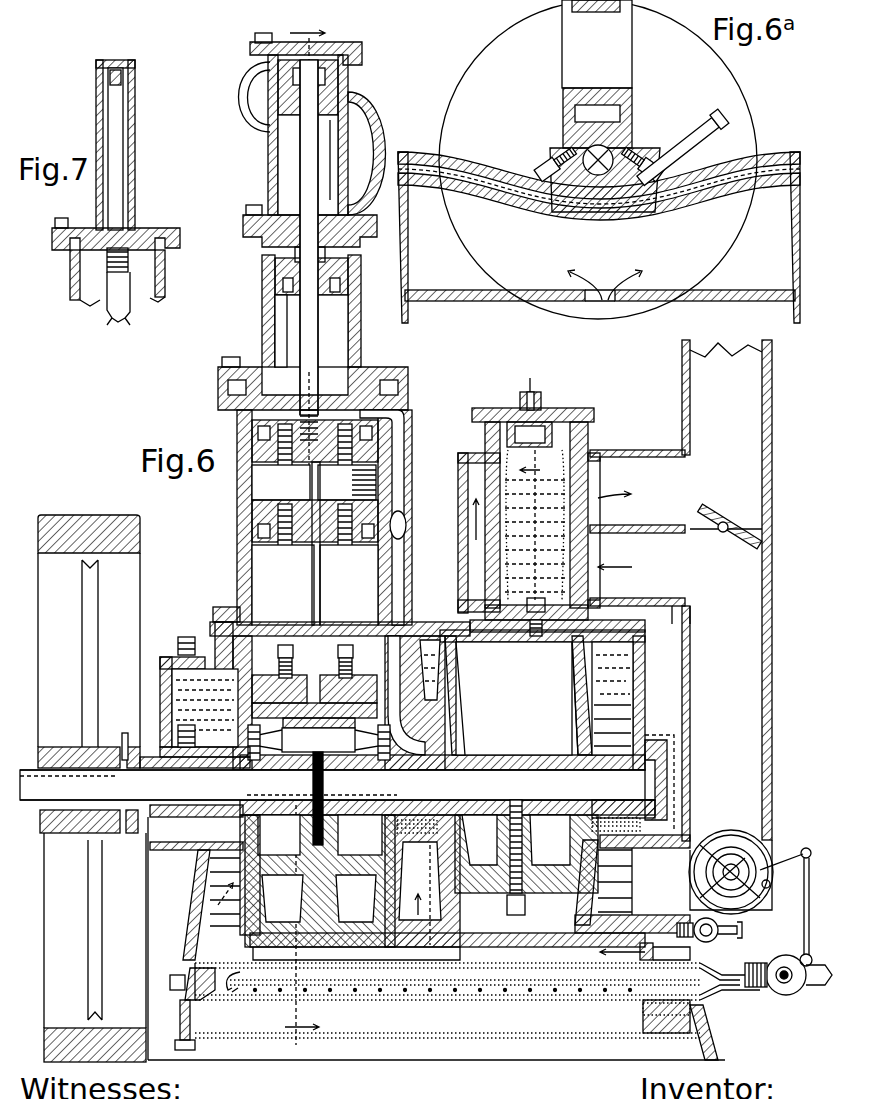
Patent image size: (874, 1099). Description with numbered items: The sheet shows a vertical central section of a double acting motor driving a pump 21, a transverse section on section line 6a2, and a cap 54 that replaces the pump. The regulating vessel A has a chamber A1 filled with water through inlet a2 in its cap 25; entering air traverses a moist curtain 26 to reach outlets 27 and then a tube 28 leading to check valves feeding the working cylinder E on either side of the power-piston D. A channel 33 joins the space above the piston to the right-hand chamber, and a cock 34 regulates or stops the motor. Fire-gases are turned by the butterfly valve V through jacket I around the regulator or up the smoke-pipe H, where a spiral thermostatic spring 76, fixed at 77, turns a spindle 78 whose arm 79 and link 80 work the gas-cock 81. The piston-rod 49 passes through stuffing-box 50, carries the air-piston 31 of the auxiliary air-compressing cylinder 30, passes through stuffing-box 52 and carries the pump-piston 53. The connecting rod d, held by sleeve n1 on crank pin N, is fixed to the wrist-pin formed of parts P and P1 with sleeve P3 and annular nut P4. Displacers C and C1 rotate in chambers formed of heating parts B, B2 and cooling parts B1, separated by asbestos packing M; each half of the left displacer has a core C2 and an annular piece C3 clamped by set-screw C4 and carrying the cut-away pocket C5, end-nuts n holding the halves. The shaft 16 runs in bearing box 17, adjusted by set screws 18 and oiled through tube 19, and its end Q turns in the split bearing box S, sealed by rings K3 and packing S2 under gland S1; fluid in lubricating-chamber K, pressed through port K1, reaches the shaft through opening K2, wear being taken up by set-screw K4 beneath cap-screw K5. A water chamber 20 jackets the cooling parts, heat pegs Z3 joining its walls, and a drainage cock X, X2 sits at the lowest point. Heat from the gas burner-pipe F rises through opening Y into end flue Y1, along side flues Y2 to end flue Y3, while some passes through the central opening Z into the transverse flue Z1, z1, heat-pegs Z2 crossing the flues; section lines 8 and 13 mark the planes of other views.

In FIG. 7, the cap 54 is at (135, 166).
In FIG. 7, the piston-rod 49 is at (128, 274).
In FIG. 6, the piston-rod 49 is at (311, 265).
In FIG. 7, the auxiliary air-compressing cylinder 30 is at (163, 287).
In FIG. 6, the auxiliary air-compressing cylinder 30 is at (311, 331).
In FIG. 6, the section line 8 is at (305, 534).
In FIG. 6, the pump 21 is at (270, 150).
In FIG. 6, the pump-piston 53 is at (308, 165).
In FIG. 6, the stuffing-box 52 is at (300, 218).
In FIG. 6, the air-piston 31 is at (311, 311).
In FIG. 6, the stuffing-box 50 is at (286, 332).
In FIG. 6, the tube 28 is at (331, 399).
In FIG. 6, the annular nut P4 is at (402, 455).
In FIG. 6, the cock 34 is at (412, 527).
In FIG. 6, the channel 33 is at (404, 478).
In FIG. 6A, the channel 33 is at (605, 106).
In FIG. 6, the wrist-pin P is at (270, 485).
In FIG. 6, the sleeve P3 is at (295, 480).
In FIG. 6, the wrist-pin core P1 is at (328, 481).
In FIG. 6, the power-piston D is at (315, 535).
In FIG. 6, the working cylinder E is at (283, 585).
In FIG. 6, the connecting rod d is at (345, 543).
In FIG. 6, the inlet a2 is at (519, 391).
In FIG. 6, the cap 25 is at (587, 370).
In FIG. 6, the regulating vessel A is at (588, 440).
In FIG. 6, the outlets 27 is at (529, 434).
In FIG. 6, the section line 13 is at (571, 732).
In FIG. 6, the regulator chamber A1 is at (522, 571).
In FIG. 6, the curtain 26 is at (545, 603).
In FIG. 6, the jacket I is at (543, 533).
In FIG. 6, the smoke-pipe H is at (681, 590).
In FIG. 6, the butterfly-valve V is at (730, 521).
In FIG. 6, the heating part B is at (444, 791).
In FIG. 6, the section line 6a2 is at (430, 670).
In FIG. 6, the rotating displacer C1 is at (518, 695).
In FIG. 6, the cooling part B1 is at (580, 668).
In FIG. 6, the water chamber 20 is at (633, 670).
In FIG. 6, the heat conveying pegs Z3 is at (632, 707).
In FIG. 6, the cut-away portion C5 is at (402, 780).
In FIG. 6, the set-screw C4 is at (342, 641).
In FIG. 6, the crank pin N is at (319, 739).
In FIG. 6, the sleeve n1 is at (297, 741).
In FIG. 6, the end-nuts n is at (365, 741).
In FIG. 6, the shaft 16 is at (332, 798).
In FIG. 6A, the shaft 16 is at (598, 160).
In FIG. 6, the bearing box 17 is at (430, 768).
In FIG. 6A, the bearing box 17 is at (607, 136).
In FIG. 6, the displacer C is at (280, 868).
In FIG. 6, the core-piece C2 is at (362, 865).
In FIG. 6, the annular piece C3 is at (362, 920).
In FIG. 6, the central transverse flue z1 is at (419, 894).
In FIG. 6, the asbestos packing M is at (645, 825).
In FIG. 6A, the asbestos packing M is at (599, 186).
In FIG. 6, the housing B2 is at (576, 880).
In FIG. 6, the end flue Y3 is at (627, 882).
In FIG. 6, the opening Y is at (225, 930).
In FIG. 6, the end flue Y1 is at (205, 895).
In FIG. 6, the heat-pegs Z2 is at (215, 862).
In FIG. 6, the gas burner-pipe F is at (440, 1000).
In FIG. 6, the drainage cock X is at (742, 931).
In FIG. 6, the valve stem X2 is at (698, 950).
In FIG. 6, the thermostatic spring 76 is at (731, 866).
In FIG. 6, the spindle 78 is at (730, 871).
In FIG. 6, the fixing point 77 is at (777, 885).
In FIG. 6, the arm 79 is at (785, 853).
In FIG. 6, the link 80 is at (802, 912).
In FIG. 6, the gas-cock 81 is at (788, 967).
In FIG. 6, the split bearing box S is at (144, 788).
In FIG. 6, the gland S1 is at (124, 745).
In FIG. 6, the packing S2 is at (139, 790).
In FIG. 6, the shaft end Q is at (182, 794).
In FIG. 6, the opening K2 is at (207, 788).
In FIG. 6, the metal-packing rings K3 is at (231, 788).
In FIG. 6, the lubricating-chamber K is at (165, 695).
In FIG. 6, the cap-screw K5 is at (178, 645).
In FIG. 6, the set-screw K4 is at (178, 735).
In FIG. 6, the port K1 is at (245, 648).
In FIG. 6A, the side flues Y2 is at (599, 237).
In FIG. 6A, the set screws 18 is at (660, 121).
In FIG. 6A, the tube 19 is at (690, 142).
In FIG. 6A, the central transverse flue Z1 is at (597, 240).
In FIG. 6A, the central opening Z is at (605, 285).